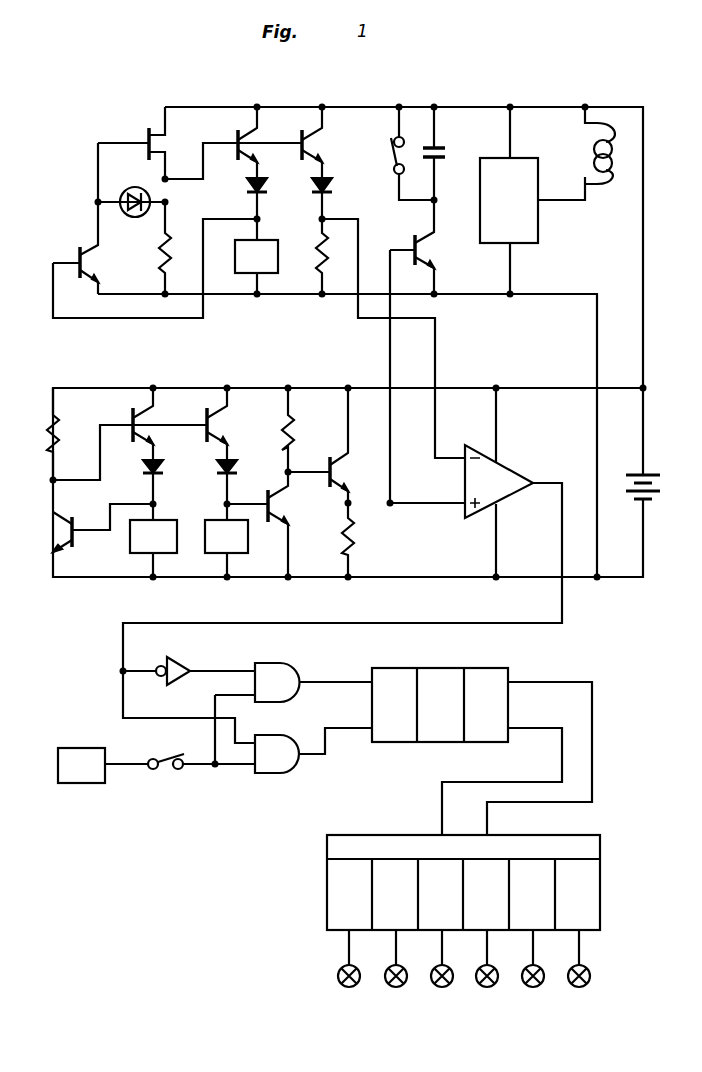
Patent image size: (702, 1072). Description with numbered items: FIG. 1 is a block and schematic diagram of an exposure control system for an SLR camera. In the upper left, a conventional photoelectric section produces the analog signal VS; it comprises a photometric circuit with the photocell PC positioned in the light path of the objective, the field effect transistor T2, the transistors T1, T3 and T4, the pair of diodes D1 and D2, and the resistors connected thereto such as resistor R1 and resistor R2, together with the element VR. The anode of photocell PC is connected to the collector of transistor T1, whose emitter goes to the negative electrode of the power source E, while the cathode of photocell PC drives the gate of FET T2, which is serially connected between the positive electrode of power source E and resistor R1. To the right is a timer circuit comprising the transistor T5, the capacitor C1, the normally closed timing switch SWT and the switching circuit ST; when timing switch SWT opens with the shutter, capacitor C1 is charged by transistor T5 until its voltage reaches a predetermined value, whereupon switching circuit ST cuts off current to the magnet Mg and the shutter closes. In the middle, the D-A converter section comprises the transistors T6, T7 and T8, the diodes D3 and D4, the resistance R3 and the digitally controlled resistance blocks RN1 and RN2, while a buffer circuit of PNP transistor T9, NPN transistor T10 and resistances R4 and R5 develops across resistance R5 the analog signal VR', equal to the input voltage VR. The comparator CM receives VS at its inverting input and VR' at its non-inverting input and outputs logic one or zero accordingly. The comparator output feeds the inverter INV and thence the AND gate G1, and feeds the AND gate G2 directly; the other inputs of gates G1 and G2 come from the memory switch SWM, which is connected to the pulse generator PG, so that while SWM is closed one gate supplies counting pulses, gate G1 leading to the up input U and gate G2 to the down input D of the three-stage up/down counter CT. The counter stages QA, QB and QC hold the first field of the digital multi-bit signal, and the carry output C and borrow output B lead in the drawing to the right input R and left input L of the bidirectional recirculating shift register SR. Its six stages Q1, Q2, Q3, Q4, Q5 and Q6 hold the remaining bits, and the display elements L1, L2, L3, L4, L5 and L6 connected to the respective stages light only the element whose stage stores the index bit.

The transistor T1 is at (79, 258).
The field effect transistor T2 is at (149, 133).
The transistor T3 is at (234, 133).
The transistor T4 is at (300, 133).
The transistor T5 is at (430, 262).
The transistor T6 is at (103, 523).
The transistor T7 is at (130, 406).
The transistor T8 is at (203, 406).
The transistor T9 is at (283, 508).
The transistor T10 is at (340, 464).
The photocell PC is at (144, 188).
The resistor R1 is at (159, 260).
The resistor R2 is at (319, 260).
The resistance R3 is at (47, 430).
The resistance R4 is at (280, 430).
The resistance R5 is at (355, 537).
The diode D1 is at (246, 191).
The diode D2 is at (333, 190).
The diode D3 is at (143, 491).
The diode D4 is at (217, 491).
The input voltage VR is at (256, 256).
The analog signal VS is at (333, 232).
The timing switch SWT is at (385, 150).
The capacitor C1 is at (453, 141).
The switching circuit ST is at (532, 200).
The magnet Mg is at (608, 182).
The power source E is at (626, 498).
The digitally-controlled adjustable resistance block RN1 is at (153, 548).
The digitally-controlled adjustable resistance block RN2 is at (226, 548).
The analog signal VR' is at (416, 539).
The comparator CM is at (516, 477).
The inverter INV is at (170, 658).
The AND gate G1 is at (277, 682).
The AND gate G2 is at (277, 754).
The pulse generator PG is at (81, 765).
The memory switch SWM is at (164, 774).
The up/down counter CT is at (407, 754).
The first stage QA is at (397, 729).
The second stage QB is at (442, 729).
The third stage QC is at (487, 729).
The up input terminal U is at (358, 670).
The down input terminal D is at (358, 716).
The carry output terminal C is at (521, 670).
The borrow output terminal B is at (521, 716).
The left input terminal L is at (454, 824).
The right input terminal R is at (501, 824).
The bidirectional shift register SR is at (322, 896).
The shift register stage Q1 is at (348, 920).
The shift register stage Q2 is at (393, 920).
The shift register stage Q3 is at (439, 920).
The shift register stage Q4 is at (484, 920).
The shift register stage Q5 is at (530, 920).
The shift register stage Q6 is at (576, 920).
The display element L1 is at (348, 971).
The display element L2 is at (394, 971).
The display element L3 is at (440, 971).
The display element L4 is at (485, 971).
The display element L5 is at (531, 971).
The display element L6 is at (577, 971).